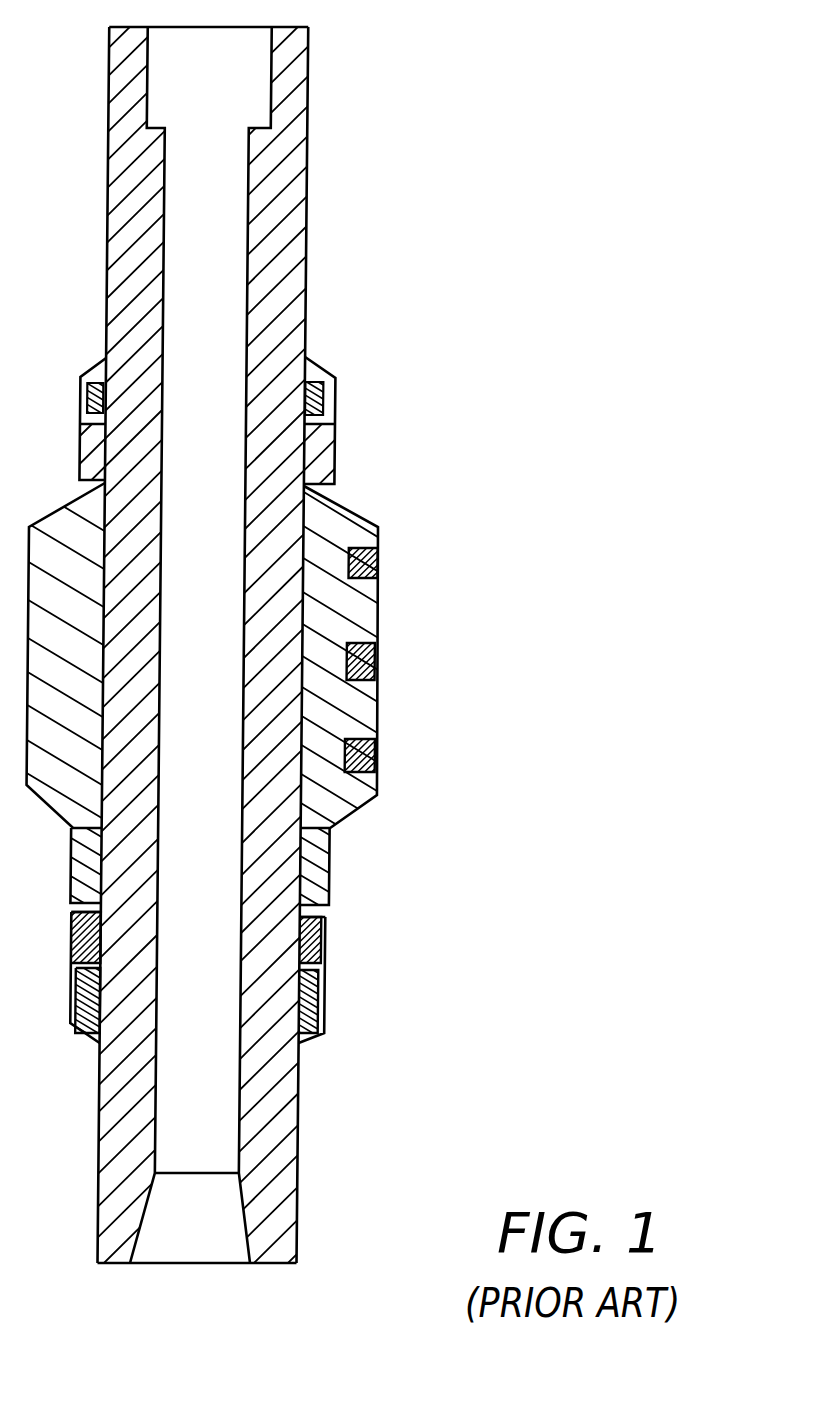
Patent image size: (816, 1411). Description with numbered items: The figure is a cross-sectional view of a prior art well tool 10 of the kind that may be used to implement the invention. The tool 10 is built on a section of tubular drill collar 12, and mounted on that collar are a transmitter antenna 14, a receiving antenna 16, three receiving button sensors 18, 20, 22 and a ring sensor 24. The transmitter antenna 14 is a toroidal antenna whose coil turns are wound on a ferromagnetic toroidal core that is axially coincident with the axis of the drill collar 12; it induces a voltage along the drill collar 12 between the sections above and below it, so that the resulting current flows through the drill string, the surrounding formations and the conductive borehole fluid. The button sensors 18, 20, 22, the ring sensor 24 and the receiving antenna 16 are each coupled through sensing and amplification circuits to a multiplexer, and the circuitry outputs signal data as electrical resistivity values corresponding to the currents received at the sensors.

The tool 10 is at (336, 105).
The tubular drill collar 12 is at (305, 310).
The transmitter antenna 14 is at (325, 405).
The receiving antenna 16 is at (323, 942).
The receiving button sensor 18 is at (377, 562).
The receiving button sensor 20 is at (377, 663).
The receiving button sensor 22 is at (375, 755).
The ring sensor 24 is at (323, 1013).